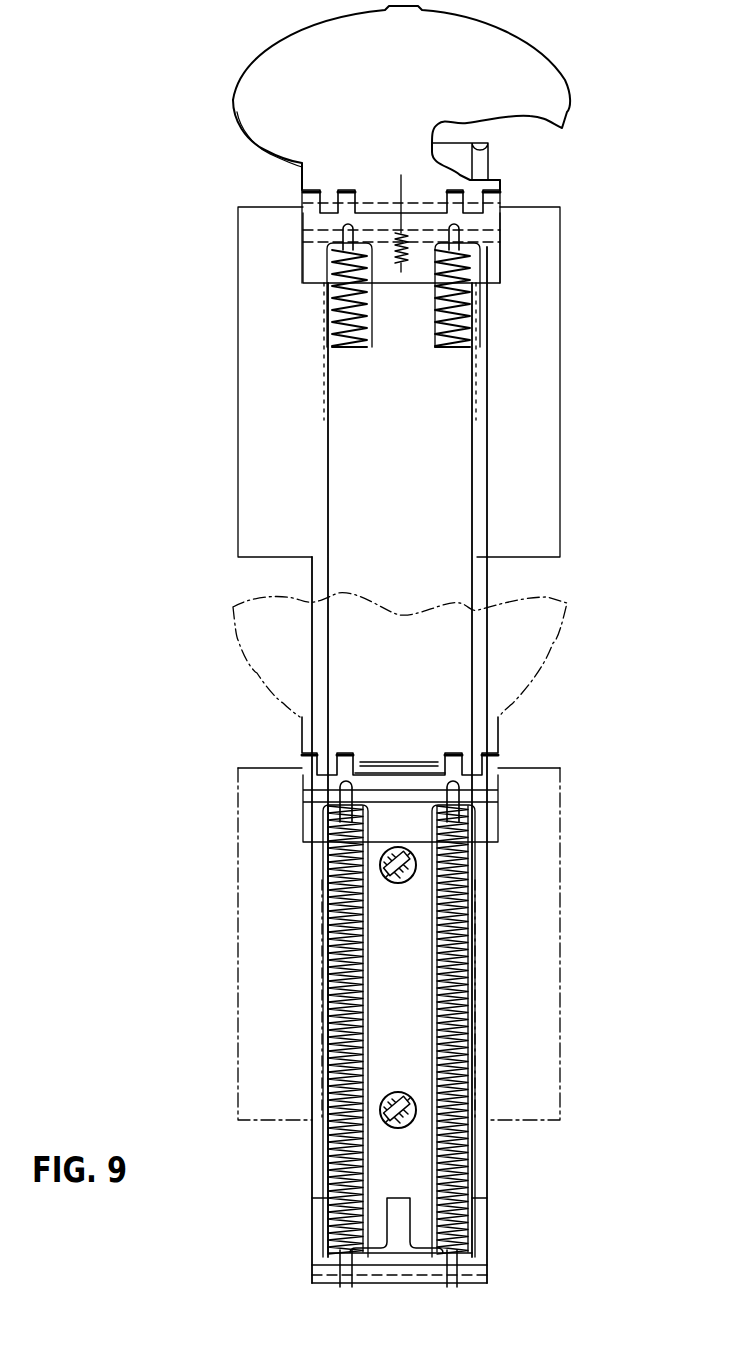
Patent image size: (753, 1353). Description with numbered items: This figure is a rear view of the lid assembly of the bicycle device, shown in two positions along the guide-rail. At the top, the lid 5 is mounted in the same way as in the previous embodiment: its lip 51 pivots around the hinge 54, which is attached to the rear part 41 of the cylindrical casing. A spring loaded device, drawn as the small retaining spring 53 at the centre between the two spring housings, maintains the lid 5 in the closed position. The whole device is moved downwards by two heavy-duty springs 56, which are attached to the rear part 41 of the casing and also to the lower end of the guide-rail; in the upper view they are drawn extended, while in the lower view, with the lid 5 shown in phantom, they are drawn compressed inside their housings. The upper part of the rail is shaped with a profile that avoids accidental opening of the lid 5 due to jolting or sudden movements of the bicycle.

The lid 5 is at (280, 53).
The lip 51 is at (313, 175).
The hinge 54 is at (300, 203).
The rear part of the cylindrical casing 41 is at (310, 220).
The retaining spring 53 is at (400, 266).
The heavy-duty springs 56 is at (455, 345).